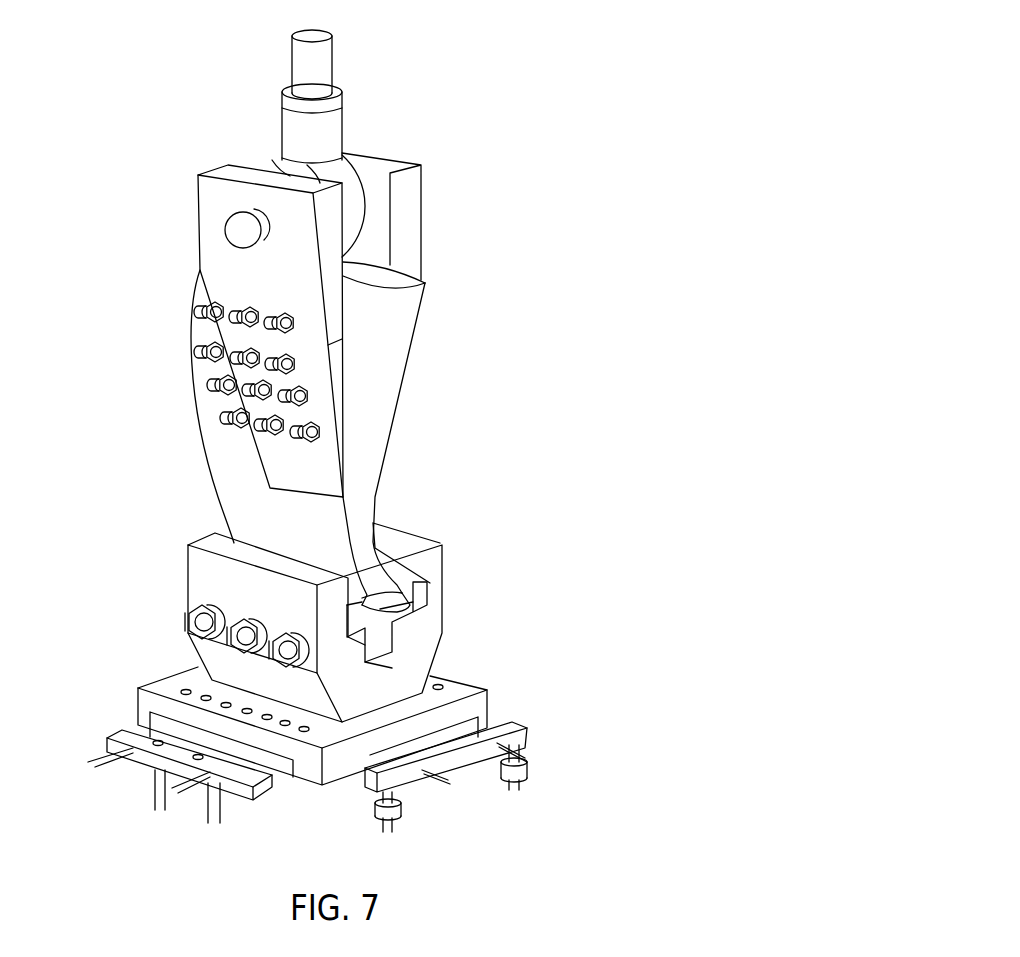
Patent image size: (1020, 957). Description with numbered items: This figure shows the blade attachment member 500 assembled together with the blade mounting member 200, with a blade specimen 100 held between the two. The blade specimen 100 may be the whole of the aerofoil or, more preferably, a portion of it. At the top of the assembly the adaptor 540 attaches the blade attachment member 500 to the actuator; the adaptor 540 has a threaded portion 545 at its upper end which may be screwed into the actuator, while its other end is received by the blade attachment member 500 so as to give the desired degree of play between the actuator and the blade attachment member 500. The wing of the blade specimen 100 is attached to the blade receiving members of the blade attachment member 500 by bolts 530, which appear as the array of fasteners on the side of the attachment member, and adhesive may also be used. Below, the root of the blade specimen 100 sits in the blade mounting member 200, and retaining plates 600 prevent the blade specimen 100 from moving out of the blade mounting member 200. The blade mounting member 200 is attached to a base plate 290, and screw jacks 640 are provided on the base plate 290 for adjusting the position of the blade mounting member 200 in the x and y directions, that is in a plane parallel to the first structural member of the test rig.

The blade attachment member 500 is at (600, 148).
The threaded portion 545 is at (323, 63).
The adaptor 540 is at (331, 136).
The blade specimen 100 is at (413, 313).
The bolts 530 is at (338, 398).
The blade mounting member 200 is at (416, 546).
The retaining plates 600 is at (403, 612).
The base plate 290 is at (462, 686).
The screw jacks 640 is at (527, 735).